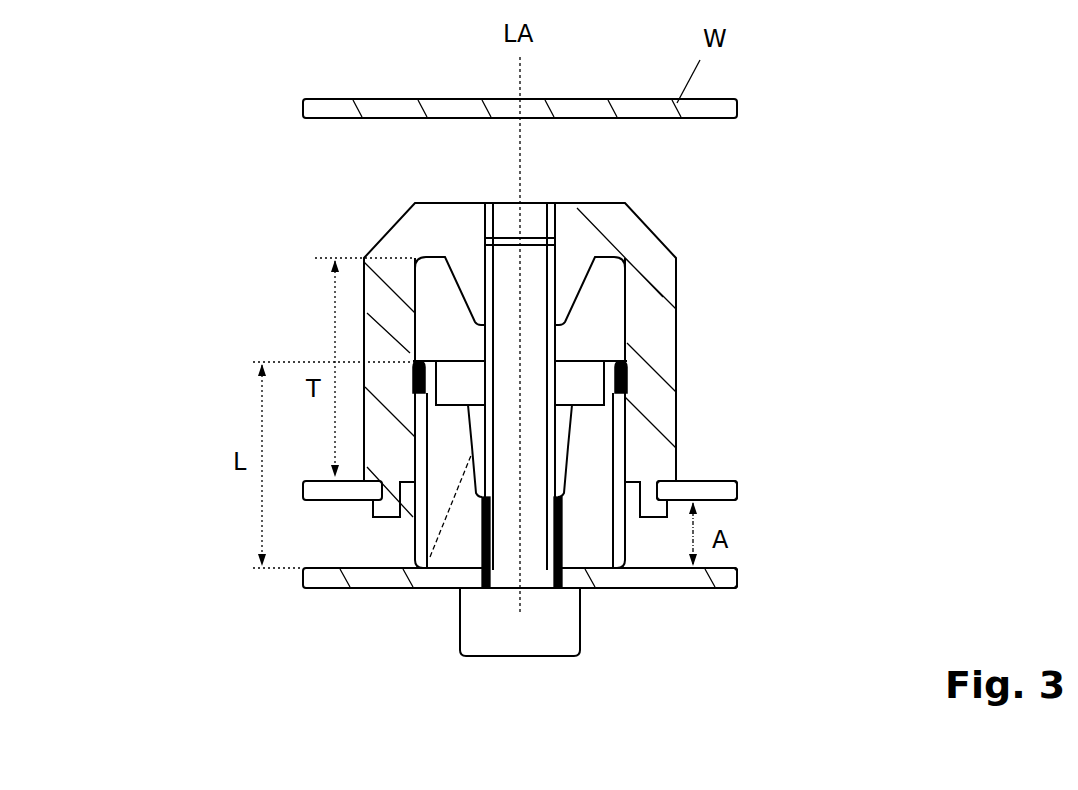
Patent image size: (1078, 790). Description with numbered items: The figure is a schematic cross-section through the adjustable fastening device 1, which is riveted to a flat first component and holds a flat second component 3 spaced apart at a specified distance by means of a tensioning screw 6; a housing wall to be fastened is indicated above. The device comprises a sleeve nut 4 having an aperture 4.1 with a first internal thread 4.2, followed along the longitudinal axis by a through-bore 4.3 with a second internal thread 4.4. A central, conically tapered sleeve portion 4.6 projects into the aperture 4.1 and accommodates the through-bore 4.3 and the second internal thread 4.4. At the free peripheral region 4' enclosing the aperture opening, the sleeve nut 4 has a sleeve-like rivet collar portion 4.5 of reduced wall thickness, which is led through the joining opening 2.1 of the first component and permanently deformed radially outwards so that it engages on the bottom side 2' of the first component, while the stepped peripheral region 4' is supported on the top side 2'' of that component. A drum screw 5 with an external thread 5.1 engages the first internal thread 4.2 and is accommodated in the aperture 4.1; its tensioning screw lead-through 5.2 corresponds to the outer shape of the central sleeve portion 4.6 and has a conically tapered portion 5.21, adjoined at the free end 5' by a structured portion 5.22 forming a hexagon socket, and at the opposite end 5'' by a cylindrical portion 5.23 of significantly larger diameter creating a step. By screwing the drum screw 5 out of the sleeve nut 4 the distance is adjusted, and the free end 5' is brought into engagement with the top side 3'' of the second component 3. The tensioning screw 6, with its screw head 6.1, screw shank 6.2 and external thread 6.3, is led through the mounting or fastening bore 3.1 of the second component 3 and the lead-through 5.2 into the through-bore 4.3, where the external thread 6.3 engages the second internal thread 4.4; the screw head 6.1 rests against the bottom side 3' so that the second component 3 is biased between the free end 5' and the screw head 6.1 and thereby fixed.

The adjustable fastening device 1 is at (848, 103).
The bottom side of the first component 2' is at (737, 513).
The top side of the first component 2'' is at (773, 501).
The joining opening 2.1 is at (400, 525).
The second component 3 is at (546, 628).
The bottom side of the second component 3' is at (649, 619).
The top side of the second component 3'' is at (705, 604).
The mounting or fastening bore 3.1 is at (480, 592).
The sleeve nut 4 is at (449, 385).
The free peripheral region 4' is at (278, 521).
The aperture 4.1 is at (448, 325).
The first internal thread 4.2 is at (413, 430).
The through-bore 4.3 is at (527, 225).
The second internal thread 4.4 is at (557, 270).
The rivet collar portion 4.5 is at (380, 510).
The central sleeve portion 4.6 is at (478, 298).
The drum screw 5 is at (623, 469).
The free end of the drum screw 5' is at (428, 549).
The end of the drum screw opposite the hexagon socket 5'' is at (391, 369).
The external thread 5.1 is at (662, 475).
The tensioning screw lead-through 5.2 is at (575, 443).
The conically tapered portion 5.21 is at (645, 478).
The structured portion 5.22 is at (572, 468).
The cylindrical portion 5.23 is at (583, 370).
The tensioning screw 6 is at (418, 655).
The screw head 6.1 is at (515, 645).
The screw shank 6.2 is at (527, 340).
The external thread 6.3 is at (555, 388).